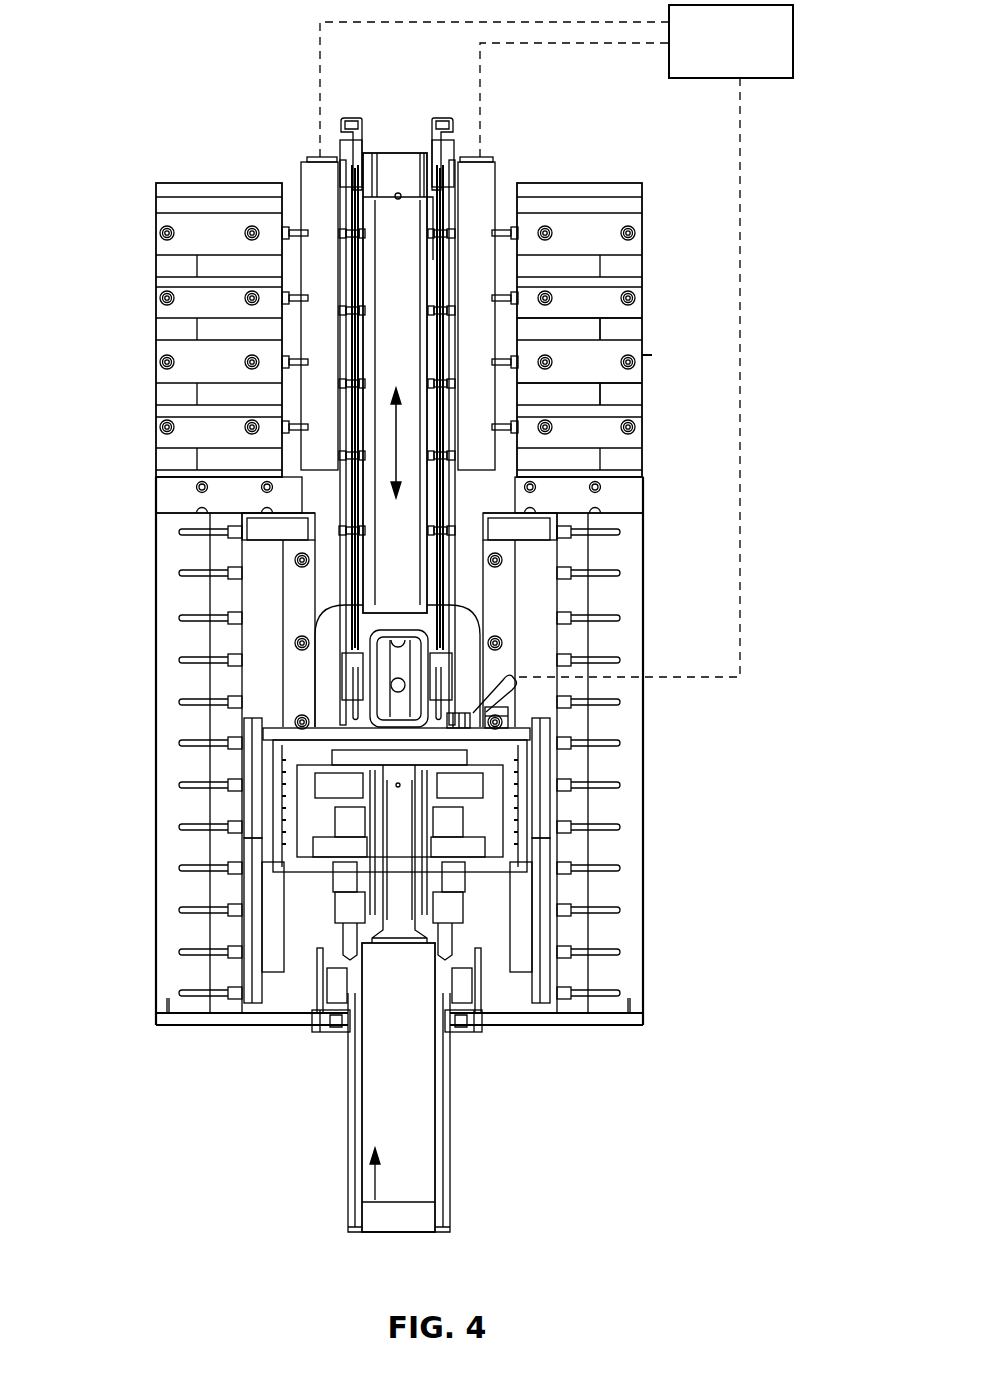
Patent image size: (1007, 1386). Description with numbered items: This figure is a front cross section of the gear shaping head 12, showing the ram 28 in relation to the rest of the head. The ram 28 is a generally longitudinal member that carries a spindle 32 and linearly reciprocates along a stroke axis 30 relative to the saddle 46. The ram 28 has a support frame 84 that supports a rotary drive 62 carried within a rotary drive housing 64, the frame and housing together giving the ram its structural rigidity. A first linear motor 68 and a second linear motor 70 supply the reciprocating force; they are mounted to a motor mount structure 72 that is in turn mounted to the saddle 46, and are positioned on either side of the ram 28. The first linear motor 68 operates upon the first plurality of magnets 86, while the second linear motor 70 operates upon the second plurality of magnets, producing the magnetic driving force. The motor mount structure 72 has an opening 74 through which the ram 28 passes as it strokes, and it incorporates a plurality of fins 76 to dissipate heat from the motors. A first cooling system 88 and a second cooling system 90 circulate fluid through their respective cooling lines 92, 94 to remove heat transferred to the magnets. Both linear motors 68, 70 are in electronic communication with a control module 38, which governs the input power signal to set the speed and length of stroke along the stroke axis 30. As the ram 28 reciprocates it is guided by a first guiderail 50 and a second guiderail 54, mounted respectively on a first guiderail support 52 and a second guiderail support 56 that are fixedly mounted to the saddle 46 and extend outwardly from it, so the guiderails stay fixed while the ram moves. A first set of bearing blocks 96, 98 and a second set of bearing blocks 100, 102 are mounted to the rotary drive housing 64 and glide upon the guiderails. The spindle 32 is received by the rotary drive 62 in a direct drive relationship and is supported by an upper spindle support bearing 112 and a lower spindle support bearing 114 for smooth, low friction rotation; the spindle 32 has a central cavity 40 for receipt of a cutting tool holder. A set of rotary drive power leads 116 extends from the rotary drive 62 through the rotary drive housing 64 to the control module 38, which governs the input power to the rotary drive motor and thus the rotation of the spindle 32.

The gear shaping head 12 is at (703, 703).
The ram 28 is at (310, 606).
The stroke axis 30 is at (394, 437).
The spindle 32 is at (450, 1188).
The control module 38 is at (793, 68).
The central cavity 40 is at (375, 1200).
The saddle 46 is at (622, 1025).
The first guiderail 50 is at (205, 637).
The first guiderail support 52 is at (250, 728).
The second guiderail 54 is at (570, 636).
The second guiderail support 56 is at (613, 592).
The rotary drive 62 is at (547, 847).
The rotary drive housing 64 is at (533, 787).
The first linear motor 68 is at (317, 183).
The second linear motor 70 is at (480, 183).
The motor mount structure 72 is at (632, 249).
The opening 74 is at (412, 197).
The fins 76 is at (628, 331).
The support frame 84 is at (433, 262).
The first plurality of magnets 86 is at (345, 285).
The first cooling system 88 is at (334, 132).
The second cooling system 90 is at (462, 132).
The cooling line 92 is at (345, 215).
The cooling line 94 is at (448, 217).
The bearing block 96 is at (250, 768).
The bearing block 98 is at (250, 928).
The bearing block 100 is at (547, 768).
The bearing block 102 is at (547, 929).
The upper spindle support bearing 112 is at (458, 884).
The lower spindle support bearing 114 is at (465, 1003).
The rotary drive power leads 116 is at (510, 690).